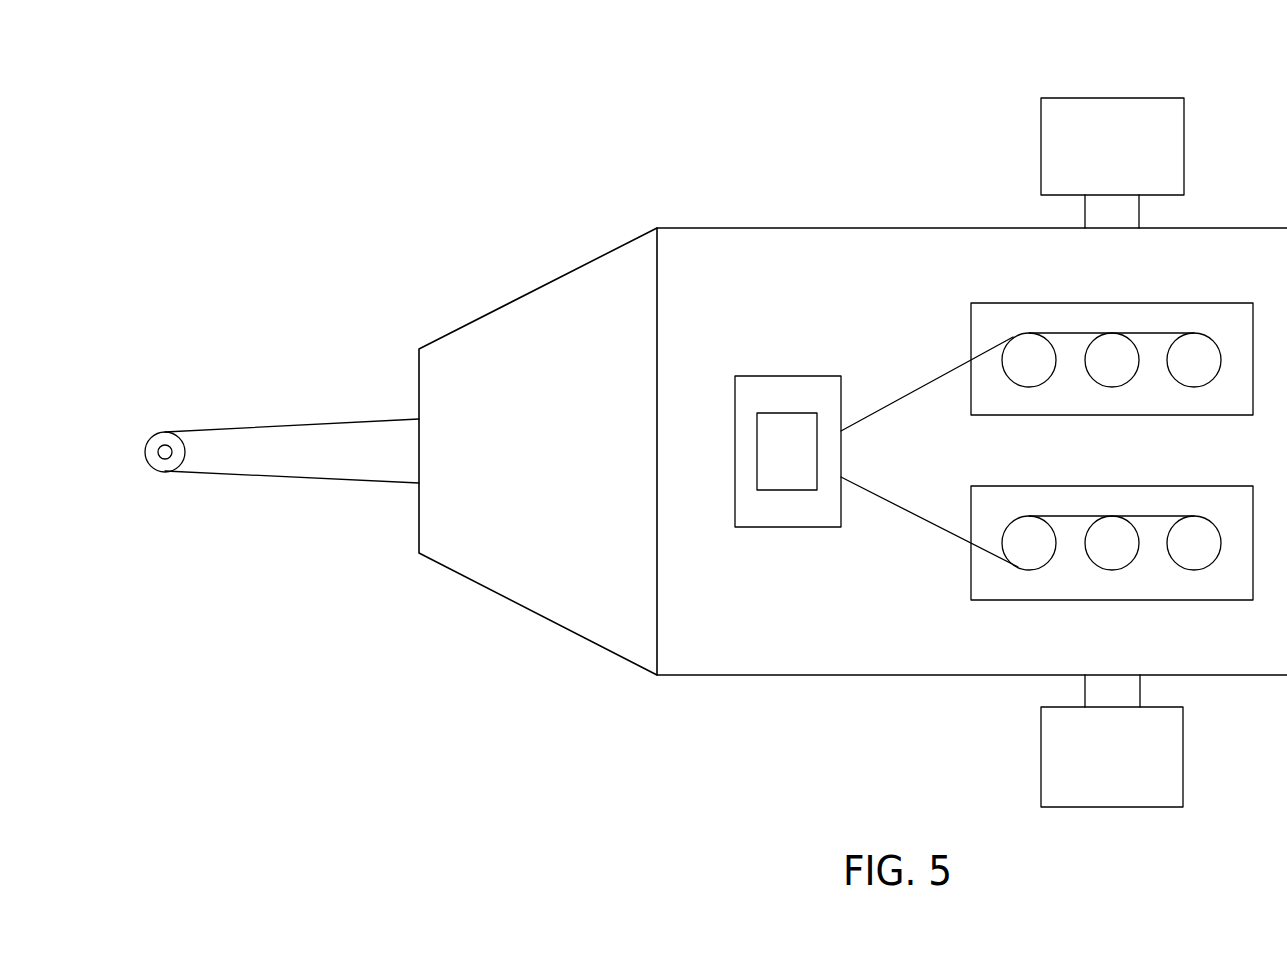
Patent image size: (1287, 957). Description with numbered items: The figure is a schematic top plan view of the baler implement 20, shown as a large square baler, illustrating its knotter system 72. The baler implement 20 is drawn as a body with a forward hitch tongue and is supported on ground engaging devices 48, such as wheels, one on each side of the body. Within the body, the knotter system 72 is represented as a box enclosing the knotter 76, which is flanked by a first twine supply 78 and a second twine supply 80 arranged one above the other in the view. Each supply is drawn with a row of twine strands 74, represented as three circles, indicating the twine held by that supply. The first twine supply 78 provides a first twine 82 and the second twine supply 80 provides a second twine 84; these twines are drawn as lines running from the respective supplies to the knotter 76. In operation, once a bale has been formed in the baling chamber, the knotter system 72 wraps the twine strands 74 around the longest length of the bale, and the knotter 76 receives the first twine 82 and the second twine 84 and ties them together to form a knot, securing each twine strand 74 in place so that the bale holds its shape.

The baler implement 20 is at (514, 72).
The ground engaging devices 48 is at (1041, 118).
The knotter system 72 is at (792, 375).
The twine strands 74 is at (1068, 333).
The knotter 76 is at (772, 465).
The first twine supply 78 is at (1193, 300).
The second twine supply 80 is at (1172, 485).
The first twine 82 is at (927, 365).
The second twine 84 is at (929, 535).